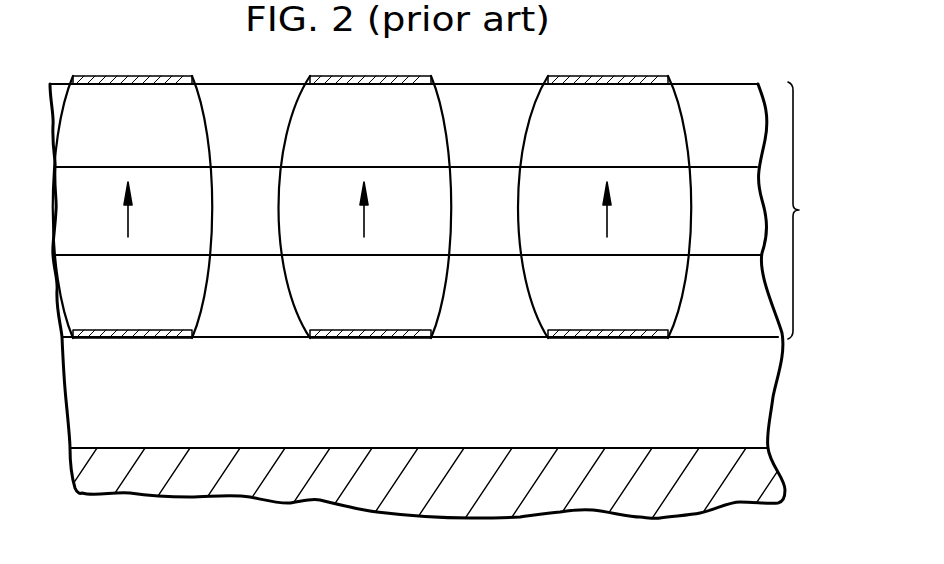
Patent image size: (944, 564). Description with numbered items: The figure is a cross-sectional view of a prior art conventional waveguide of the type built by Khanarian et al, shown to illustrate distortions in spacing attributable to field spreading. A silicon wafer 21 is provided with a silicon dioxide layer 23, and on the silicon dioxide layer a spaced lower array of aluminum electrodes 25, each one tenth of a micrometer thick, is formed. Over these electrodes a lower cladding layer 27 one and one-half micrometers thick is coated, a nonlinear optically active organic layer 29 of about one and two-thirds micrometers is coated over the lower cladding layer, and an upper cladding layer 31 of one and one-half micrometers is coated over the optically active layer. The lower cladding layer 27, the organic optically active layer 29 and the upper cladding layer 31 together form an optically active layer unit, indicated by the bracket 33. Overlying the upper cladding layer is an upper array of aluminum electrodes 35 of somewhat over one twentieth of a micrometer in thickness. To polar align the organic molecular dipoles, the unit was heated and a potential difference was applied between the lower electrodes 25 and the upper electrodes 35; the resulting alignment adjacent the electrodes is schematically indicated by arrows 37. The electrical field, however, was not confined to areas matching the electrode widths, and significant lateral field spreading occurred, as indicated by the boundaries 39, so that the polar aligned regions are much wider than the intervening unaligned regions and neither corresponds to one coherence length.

The silicon wafer 21 is at (772, 483).
The silicon dioxide layer 23 is at (767, 397).
The aluminum electrodes 25 is at (613, 328).
The lower cladding layer 27 is at (70, 290).
The nonlinear optically active organic layer 29 is at (53, 213).
The upper cladding layer 31 is at (52, 132).
The layered structure 33 is at (813, 210).
The aluminum electrodes 35 is at (618, 74).
The arrows 37 is at (130, 218).
The boundaries 39 is at (448, 138).